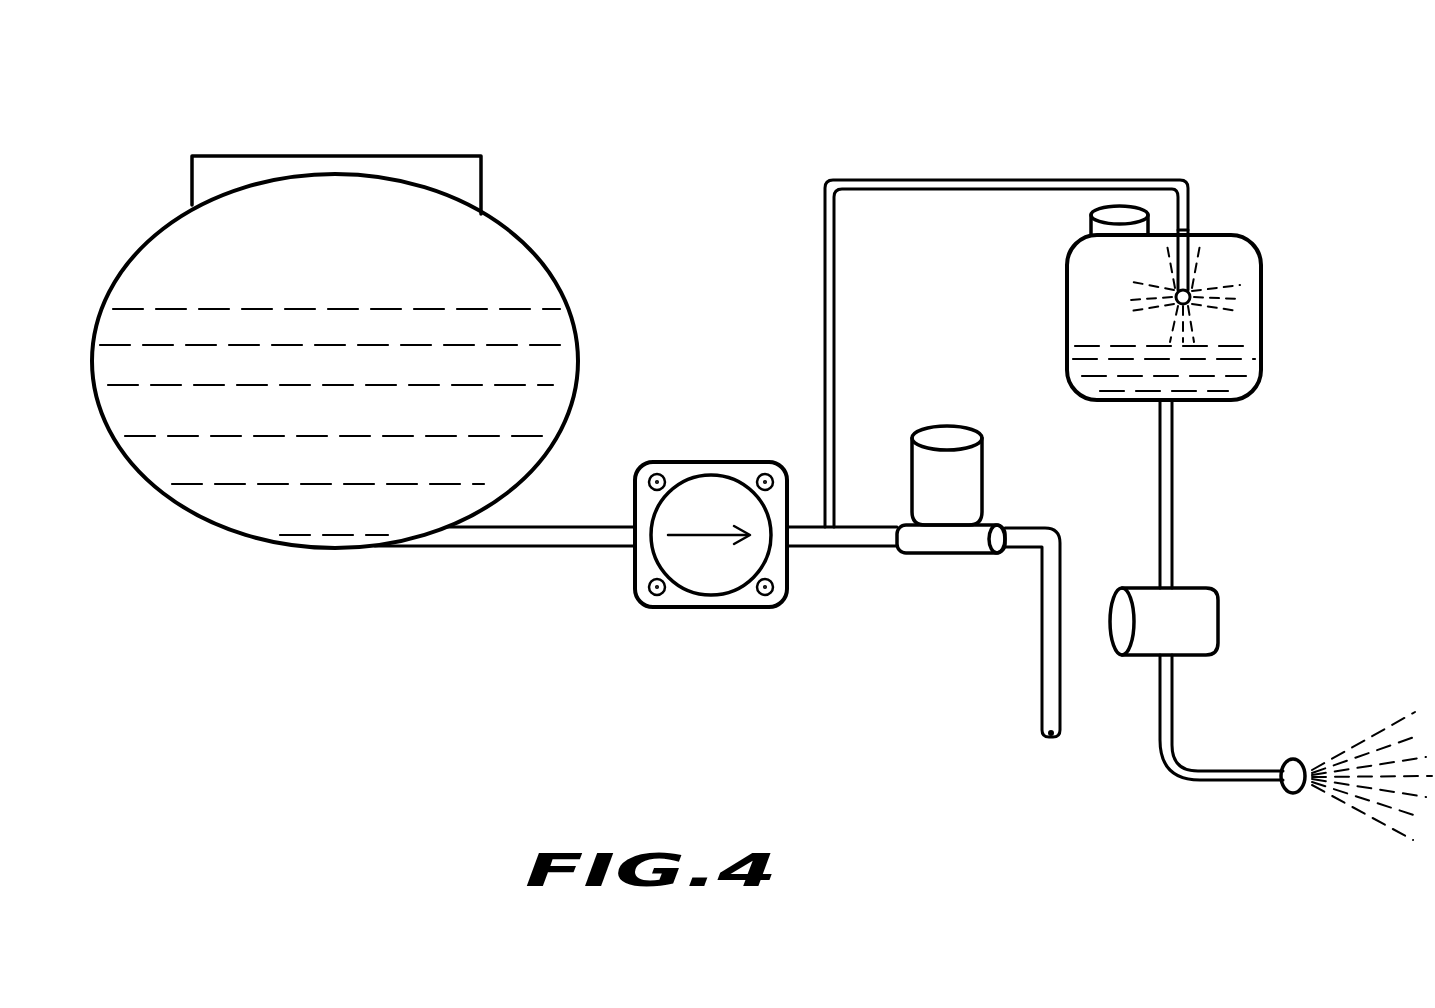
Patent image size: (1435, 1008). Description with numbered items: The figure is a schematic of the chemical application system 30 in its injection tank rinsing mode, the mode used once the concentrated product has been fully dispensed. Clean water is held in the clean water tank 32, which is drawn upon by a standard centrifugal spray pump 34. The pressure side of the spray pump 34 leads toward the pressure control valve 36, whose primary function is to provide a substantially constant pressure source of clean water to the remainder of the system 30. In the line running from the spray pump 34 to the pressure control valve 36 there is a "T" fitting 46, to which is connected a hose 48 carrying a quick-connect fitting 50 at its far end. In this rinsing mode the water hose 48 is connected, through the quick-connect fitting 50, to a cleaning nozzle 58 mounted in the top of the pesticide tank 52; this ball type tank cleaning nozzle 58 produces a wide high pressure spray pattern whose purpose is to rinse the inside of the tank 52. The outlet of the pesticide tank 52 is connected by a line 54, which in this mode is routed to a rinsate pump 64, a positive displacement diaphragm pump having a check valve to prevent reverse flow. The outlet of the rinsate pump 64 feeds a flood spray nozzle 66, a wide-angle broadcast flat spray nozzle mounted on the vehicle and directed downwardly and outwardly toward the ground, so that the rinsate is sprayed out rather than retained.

The chemical application system 30 is at (208, 135).
The clean water tank 32 is at (541, 262).
The centrifugal spray pump 34 is at (660, 607).
The pressure control valve 36 is at (960, 425).
The "T" fitting 46 is at (832, 551).
The hose 48 is at (933, 180).
The quick-connect fitting 50 is at (1195, 230).
The pesticide tank 52 is at (1262, 348).
The line 54 is at (1173, 450).
The cleaning nozzle 58 is at (1194, 289).
The rinsate pump 64 is at (1218, 618).
The flood spray nozzle 66 is at (1288, 793).